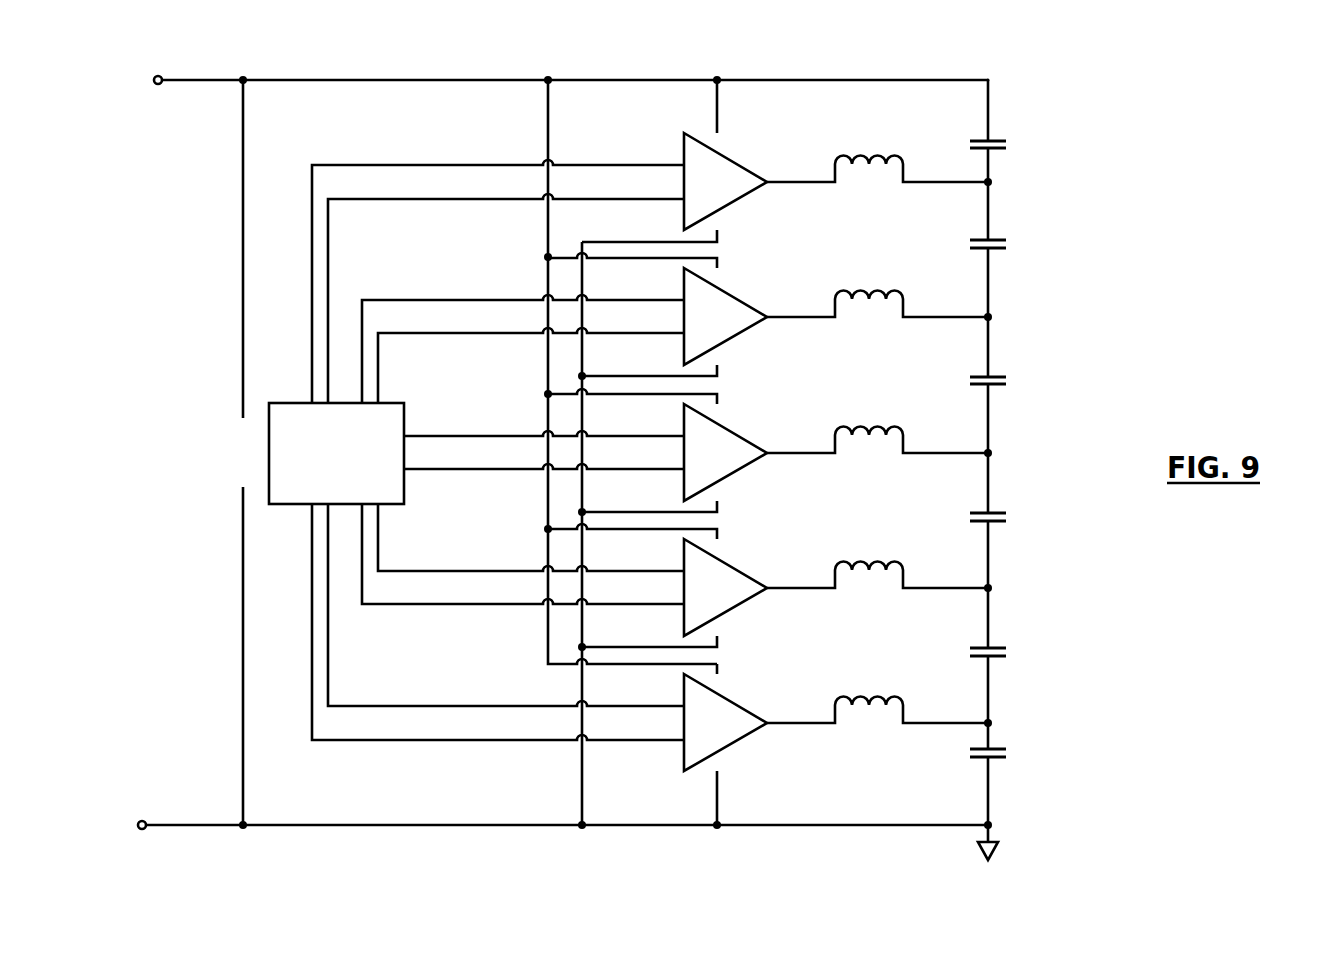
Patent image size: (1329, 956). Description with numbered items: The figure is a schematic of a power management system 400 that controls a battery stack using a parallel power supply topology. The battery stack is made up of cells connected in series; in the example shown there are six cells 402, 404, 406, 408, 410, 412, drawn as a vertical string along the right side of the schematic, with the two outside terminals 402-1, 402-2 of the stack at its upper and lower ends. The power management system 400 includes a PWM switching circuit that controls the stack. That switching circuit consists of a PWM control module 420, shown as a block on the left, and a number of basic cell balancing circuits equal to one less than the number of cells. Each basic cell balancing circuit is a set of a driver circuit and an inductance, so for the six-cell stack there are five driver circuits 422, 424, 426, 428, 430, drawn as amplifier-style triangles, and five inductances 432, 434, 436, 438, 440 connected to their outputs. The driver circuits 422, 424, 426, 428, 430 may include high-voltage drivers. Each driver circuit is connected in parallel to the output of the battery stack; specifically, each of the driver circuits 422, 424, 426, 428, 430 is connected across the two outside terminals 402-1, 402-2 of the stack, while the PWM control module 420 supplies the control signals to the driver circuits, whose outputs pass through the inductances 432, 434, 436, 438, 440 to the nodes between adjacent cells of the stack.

The power management system 400 is at (718, 448).
The outside terminal of the battery stack 402-1 is at (1008, 78).
The outside terminal of the battery stack 402-2 is at (1008, 822).
The cell 402 is at (995, 748).
The cell 404 is at (995, 647).
The cell 406 is at (995, 512).
The cell 408 is at (995, 376).
The cell 410 is at (995, 239).
The cell 412 is at (995, 140).
The PWM control module 420 is at (404, 415).
The driver circuit 422 is at (743, 705).
The driver circuit 424 is at (743, 570).
The driver circuit 426 is at (743, 435).
The driver circuit 428 is at (743, 299).
The driver circuit 430 is at (743, 164).
The inductance 432 is at (878, 696).
The inductance 434 is at (878, 561).
The inductance 436 is at (878, 426).
The inductance 438 is at (878, 290).
The inductance 440 is at (878, 155).